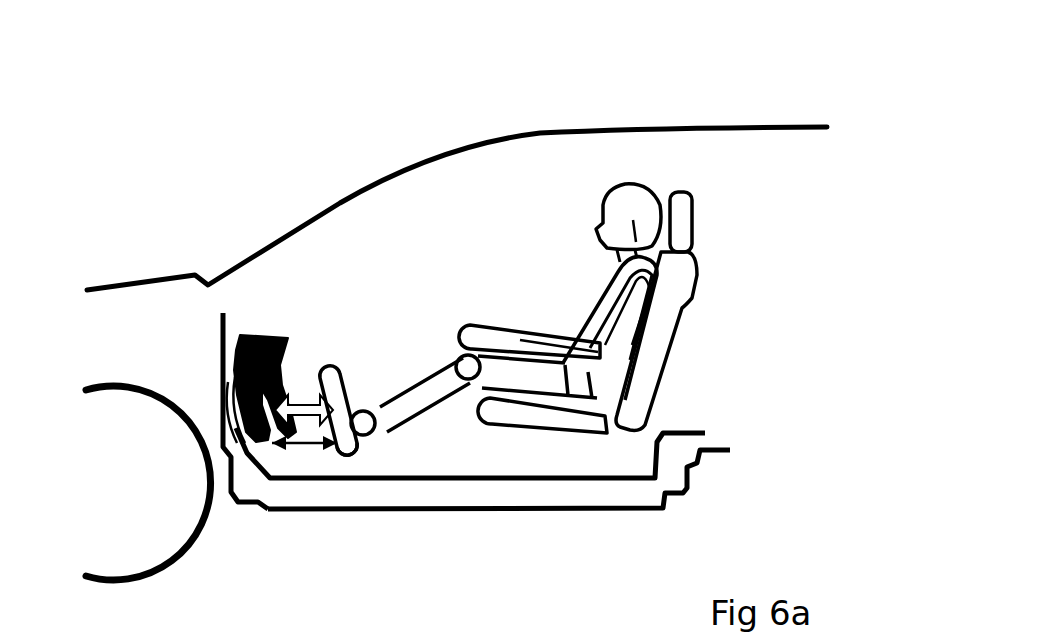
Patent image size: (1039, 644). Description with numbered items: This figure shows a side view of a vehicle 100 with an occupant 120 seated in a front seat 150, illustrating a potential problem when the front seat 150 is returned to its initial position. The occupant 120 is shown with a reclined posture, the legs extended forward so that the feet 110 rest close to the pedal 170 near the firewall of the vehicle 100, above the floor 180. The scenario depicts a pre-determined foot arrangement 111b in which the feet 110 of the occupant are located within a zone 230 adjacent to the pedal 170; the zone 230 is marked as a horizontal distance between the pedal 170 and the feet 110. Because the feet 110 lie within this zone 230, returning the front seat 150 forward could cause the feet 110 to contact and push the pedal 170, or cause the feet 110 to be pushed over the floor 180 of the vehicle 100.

The vehicle 100 is at (198, 93).
The feet 110 is at (345, 378).
The pre-determined foot arrangement 111b is at (365, 450).
The occupant 120 is at (585, 215).
The front seat 150 is at (715, 285).
The pedal 170 is at (225, 398).
The floor 180 is at (520, 515).
The zone 230 is at (304, 435).